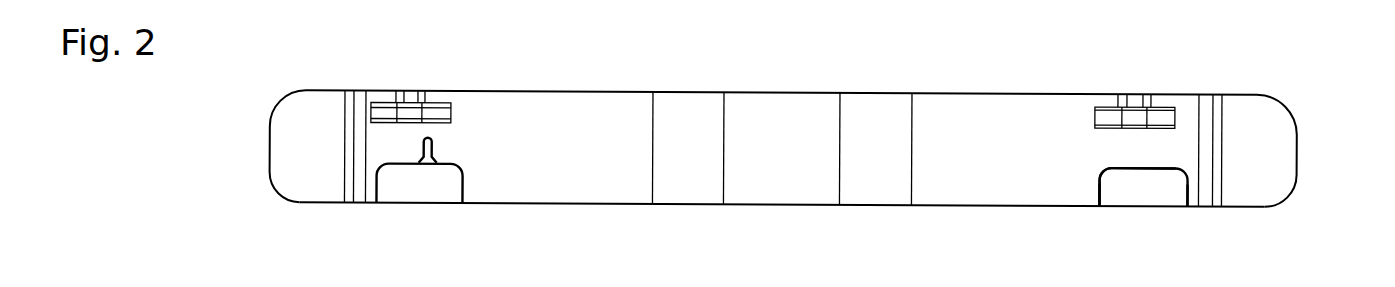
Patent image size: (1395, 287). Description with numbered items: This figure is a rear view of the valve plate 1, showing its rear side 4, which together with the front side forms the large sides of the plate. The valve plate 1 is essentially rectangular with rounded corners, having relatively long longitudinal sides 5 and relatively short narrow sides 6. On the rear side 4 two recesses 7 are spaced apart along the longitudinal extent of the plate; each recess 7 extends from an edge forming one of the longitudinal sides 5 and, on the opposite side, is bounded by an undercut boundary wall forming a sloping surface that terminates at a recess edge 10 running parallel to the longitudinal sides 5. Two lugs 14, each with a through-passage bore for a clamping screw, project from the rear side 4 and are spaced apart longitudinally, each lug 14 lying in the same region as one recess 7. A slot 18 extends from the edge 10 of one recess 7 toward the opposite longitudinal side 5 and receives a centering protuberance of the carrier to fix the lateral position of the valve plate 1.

The valve plate 1 is at (732, 180).
The rear side 4 is at (783, 148).
The longitudinal sides 5 is at (782, 148).
The narrow sides 6 is at (783, 148).
The recess 7 is at (781, 185).
The recess edge 10 is at (1137, 187).
The lug 14 is at (773, 109).
The slot 18 is at (428, 150).